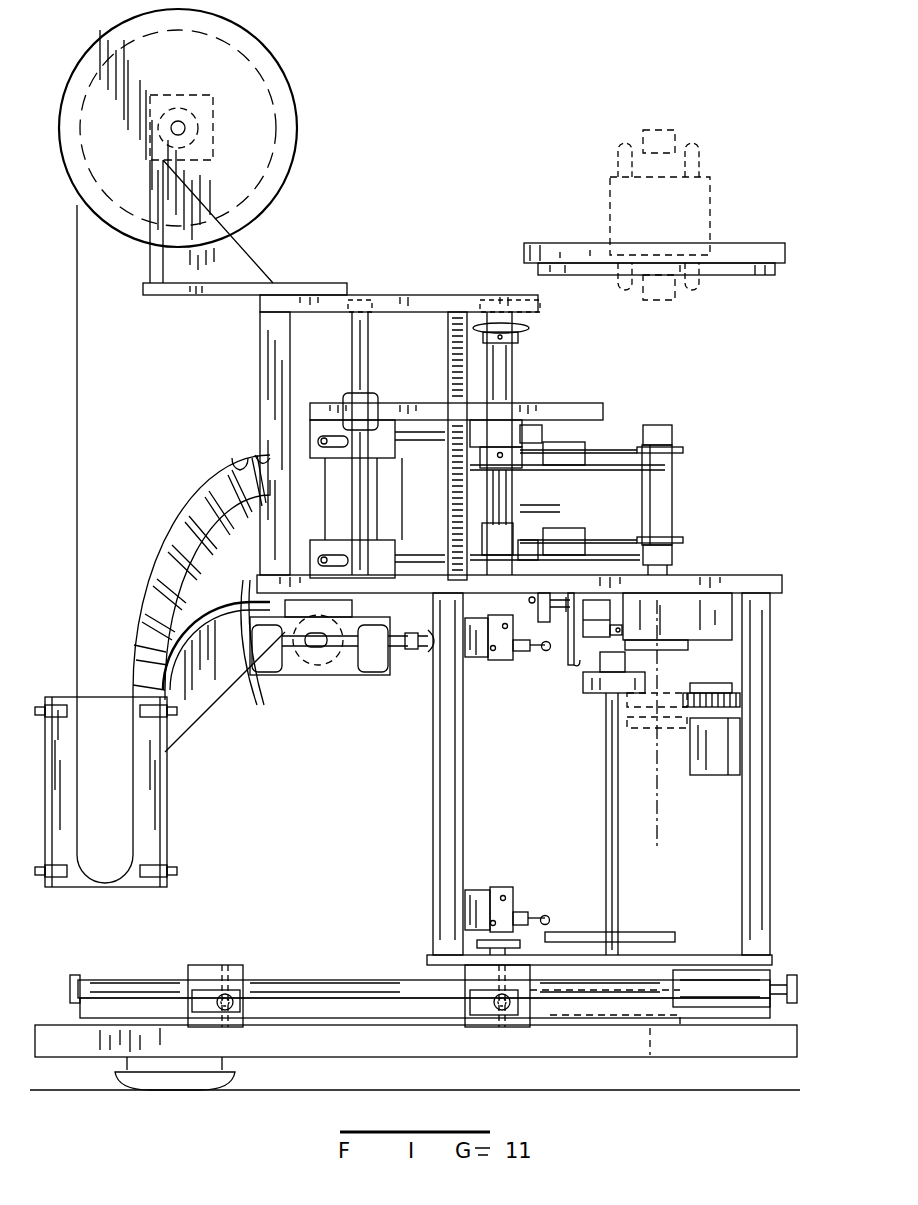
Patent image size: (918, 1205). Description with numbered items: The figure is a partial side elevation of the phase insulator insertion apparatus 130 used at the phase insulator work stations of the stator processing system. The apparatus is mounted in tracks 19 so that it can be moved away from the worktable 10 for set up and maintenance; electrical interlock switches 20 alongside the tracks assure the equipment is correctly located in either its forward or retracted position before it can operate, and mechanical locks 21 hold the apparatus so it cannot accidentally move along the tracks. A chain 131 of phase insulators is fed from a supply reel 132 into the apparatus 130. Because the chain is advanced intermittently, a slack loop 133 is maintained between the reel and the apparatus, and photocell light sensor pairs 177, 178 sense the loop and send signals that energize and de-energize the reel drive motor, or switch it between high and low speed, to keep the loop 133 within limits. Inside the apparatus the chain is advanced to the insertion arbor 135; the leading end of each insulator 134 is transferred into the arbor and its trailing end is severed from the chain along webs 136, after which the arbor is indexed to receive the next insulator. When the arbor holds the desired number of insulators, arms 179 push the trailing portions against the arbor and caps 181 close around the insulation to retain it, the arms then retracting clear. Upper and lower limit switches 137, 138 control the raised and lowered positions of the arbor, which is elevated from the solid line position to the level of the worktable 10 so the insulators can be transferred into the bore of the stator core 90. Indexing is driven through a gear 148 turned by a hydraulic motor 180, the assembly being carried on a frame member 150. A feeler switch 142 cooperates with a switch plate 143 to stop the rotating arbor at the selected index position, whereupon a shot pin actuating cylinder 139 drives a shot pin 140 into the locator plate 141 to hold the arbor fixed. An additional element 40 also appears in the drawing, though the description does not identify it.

The worktable 10 is at (572, 243).
The tracks 19 is at (305, 980).
The electrical interlock switches 20 is at (205, 990).
The mechanical locks 21 is at (233, 968).
The lower plate 40 is at (740, 280).
The stator core 90 is at (712, 212).
The apparatus 130 is at (248, 870).
The chain of phase insulators 131 is at (206, 462).
The reel 132 is at (285, 78).
The loop 133 is at (125, 870).
The insulators 134 is at (246, 456).
The insertion arbor 135 is at (685, 160).
The webs 136 is at (258, 470).
The upper limit switch 137 is at (522, 660).
The lower limit switch 138 is at (516, 912).
The shot pin actuating cylinder 139 is at (540, 625).
The shot pin 140 is at (572, 668).
The locator plate 141 is at (622, 590).
The feeler switch 142 is at (605, 650).
The switch plate 143 is at (625, 632).
The gear 148 is at (720, 708).
The frame member 150 is at (708, 575).
The photocell light sensor pair 177 is at (60, 878).
The photocell light sensor pair 178 is at (60, 697).
The arms 179 is at (684, 450).
The hydraulic motor 180 is at (722, 760).
The caps 181 is at (662, 426).